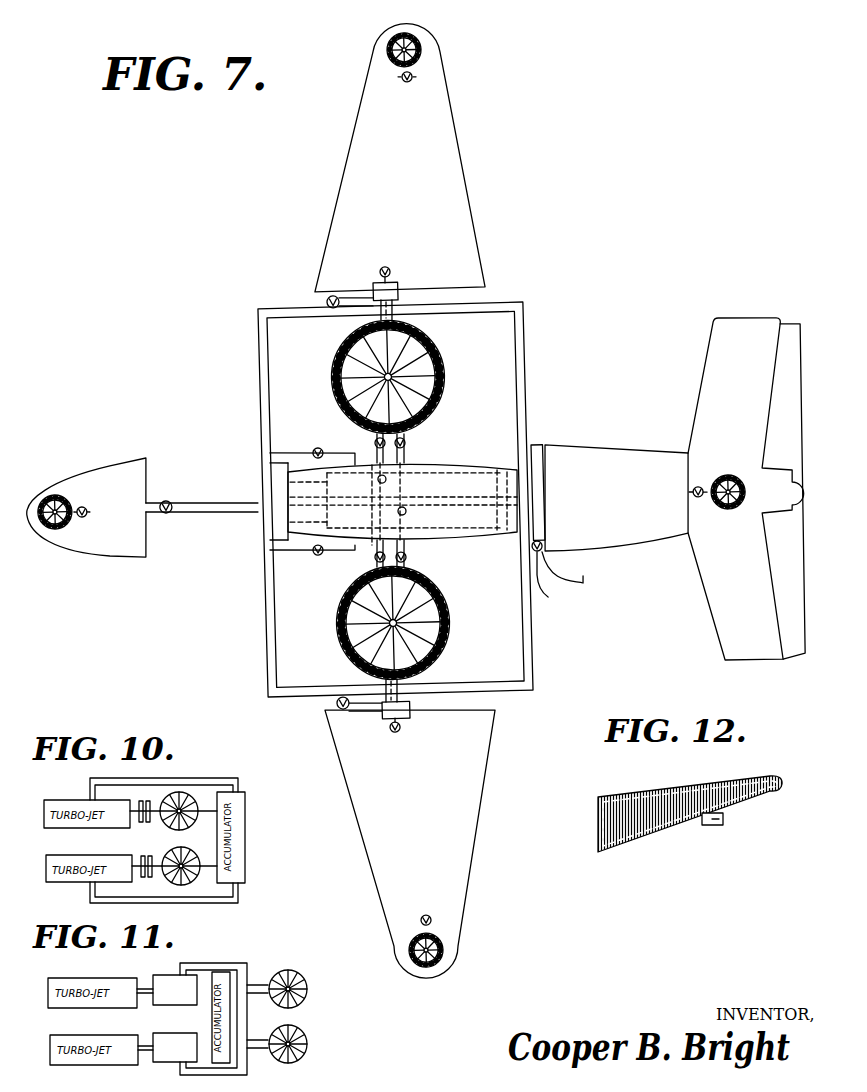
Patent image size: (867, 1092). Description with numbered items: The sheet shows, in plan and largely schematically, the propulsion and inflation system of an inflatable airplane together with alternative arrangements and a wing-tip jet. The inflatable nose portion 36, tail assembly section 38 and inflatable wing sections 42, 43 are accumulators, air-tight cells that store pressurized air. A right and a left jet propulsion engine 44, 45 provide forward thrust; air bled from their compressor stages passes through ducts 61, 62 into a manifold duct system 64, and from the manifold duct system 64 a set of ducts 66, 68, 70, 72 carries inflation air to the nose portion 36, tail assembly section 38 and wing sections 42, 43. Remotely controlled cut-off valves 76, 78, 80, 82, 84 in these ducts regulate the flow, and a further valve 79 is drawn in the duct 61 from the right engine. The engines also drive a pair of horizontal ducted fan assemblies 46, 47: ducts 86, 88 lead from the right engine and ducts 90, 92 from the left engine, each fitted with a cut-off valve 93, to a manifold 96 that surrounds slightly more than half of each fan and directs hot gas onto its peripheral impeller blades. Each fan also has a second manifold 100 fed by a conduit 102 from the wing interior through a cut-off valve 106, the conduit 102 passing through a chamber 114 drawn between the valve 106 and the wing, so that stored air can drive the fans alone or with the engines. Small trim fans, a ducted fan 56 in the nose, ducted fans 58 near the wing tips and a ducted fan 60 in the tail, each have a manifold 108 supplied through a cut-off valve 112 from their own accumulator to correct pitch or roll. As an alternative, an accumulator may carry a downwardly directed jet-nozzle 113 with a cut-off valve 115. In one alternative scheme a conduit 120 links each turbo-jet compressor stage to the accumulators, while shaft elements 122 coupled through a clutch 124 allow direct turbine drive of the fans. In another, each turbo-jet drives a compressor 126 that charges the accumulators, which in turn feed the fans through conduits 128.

In FIG. 7, the nose portion 36 is at (102, 550).
In FIG. 7, the tail assembly section 38 is at (619, 456).
In FIG. 7, the inflatable wing section 42 is at (472, 138).
In FIG. 7, the inflatable wing section 43 is at (476, 834).
In FIG. 12, the inflatable wing section 43 is at (648, 790).
In FIG. 7, the jet propulsion engine 44 is at (499, 471).
In FIG. 7, the jet propulsion engine 45 is at (507, 543).
In FIG. 7, the ducted fan assembly 46 is at (450, 369).
In FIG. 7, the ducted fan assembly 47 is at (334, 636).
In FIG. 7, the ducted fan 56 is at (51, 521).
In FIG. 7, the ducted fan 58 is at (436, 56).
In FIG. 7, the ducted fan 60 is at (727, 521).
In FIG. 7, the duct 61 is at (290, 449).
In FIG. 7, the duct 62 is at (302, 554).
In FIG. 7, the manifold duct system 64 is at (262, 379).
In FIG. 7, the duct 66 is at (214, 510).
In FIG. 7, the duct 68 is at (569, 580).
In FIG. 7, the duct 70 is at (332, 301).
In FIG. 7, the duct 72 is at (332, 706).
In FIG. 7, the cut-off valve 76 is at (316, 554).
In FIG. 7, the cut-off valve 78 is at (168, 495).
In FIG. 7, the valve 79 is at (319, 446).
In FIG. 7, the cut-off valve 80 is at (545, 578).
In FIG. 7, the cut-off valve 82 is at (332, 297).
In FIG. 7, the cut-off valve 84 is at (332, 700).
In FIG. 7, the duct 86 is at (375, 454).
In FIG. 7, the duct 88 is at (374, 558).
In FIG. 7, the duct 90 is at (407, 460).
In FIG. 7, the duct 92 is at (406, 556).
In FIG. 7, the cut-off valve 93 is at (410, 438).
In FIG. 7, the manifold 96 is at (426, 426).
In FIG. 7, the manifold 100 is at (434, 341).
In FIG. 10, the manifold 100 is at (126, 780).
In FIG. 7, the conduit 102 is at (400, 310).
In FIG. 7, the cut-off valve 106 is at (388, 269).
In FIG. 7, the manifold 108 is at (411, 64).
In FIG. 7, the cut-off valve 112 is at (423, 80).
In FIG. 12, the jet-nozzle 113 is at (704, 826).
In FIG. 7, the gear box 114 is at (404, 289).
In FIG. 12, the cut-off valve 115 is at (715, 828).
In FIG. 10, the conduit 120 is at (174, 903).
In FIG. 10, the shaft element 122 is at (168, 823).
In FIG. 10, the clutch 124 is at (140, 823).
In FIG. 11, the compressor 126 is at (192, 1033).
In FIG. 11, the conduit 128 is at (255, 982).